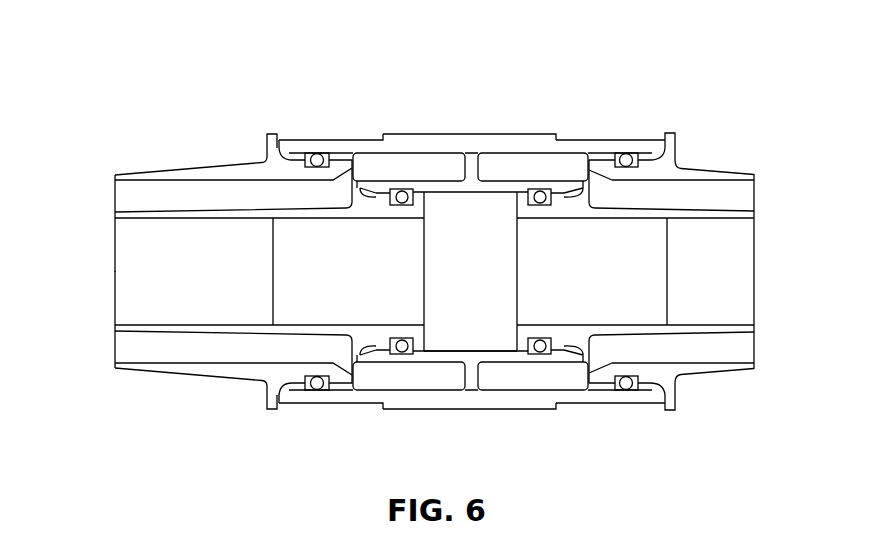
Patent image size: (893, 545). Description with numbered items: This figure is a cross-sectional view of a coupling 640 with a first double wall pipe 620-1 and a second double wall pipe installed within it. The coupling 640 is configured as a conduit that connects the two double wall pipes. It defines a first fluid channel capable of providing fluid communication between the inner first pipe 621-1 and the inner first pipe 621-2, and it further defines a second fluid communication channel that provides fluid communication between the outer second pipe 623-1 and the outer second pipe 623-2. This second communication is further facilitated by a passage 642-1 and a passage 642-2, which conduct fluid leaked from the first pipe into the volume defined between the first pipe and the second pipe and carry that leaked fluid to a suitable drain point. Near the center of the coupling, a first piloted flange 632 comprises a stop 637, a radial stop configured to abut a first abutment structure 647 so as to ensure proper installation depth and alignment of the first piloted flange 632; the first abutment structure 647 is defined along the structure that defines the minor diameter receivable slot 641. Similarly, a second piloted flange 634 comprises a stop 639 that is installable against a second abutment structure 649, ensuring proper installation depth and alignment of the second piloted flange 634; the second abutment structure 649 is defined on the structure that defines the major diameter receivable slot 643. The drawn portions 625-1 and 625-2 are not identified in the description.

The first double wall pipe 620-1 is at (756, 193).
The first pipe 621-1 is at (692, 338).
The first pipe 621-2 is at (180, 333).
The second pipe 623-1 is at (730, 171).
The second pipe 623-2 is at (152, 176).
The first tube 625-1 is at (754, 343).
The second tube 625-2 is at (132, 342).
The first piloted flange 632 is at (566, 340).
The second piloted flange 634 is at (670, 175).
The stop 637 is at (588, 172).
The stop 639 is at (672, 133).
The coupling 640 is at (437, 134).
The minor diameter receivable slot 641 is at (505, 335).
The passage 642-1 is at (368, 163).
The passage 642-2 is at (432, 380).
The major diameter receivable slot 643 is at (560, 167).
The first abutment structure 647 is at (518, 188).
The second abutment structure 649 is at (645, 147).